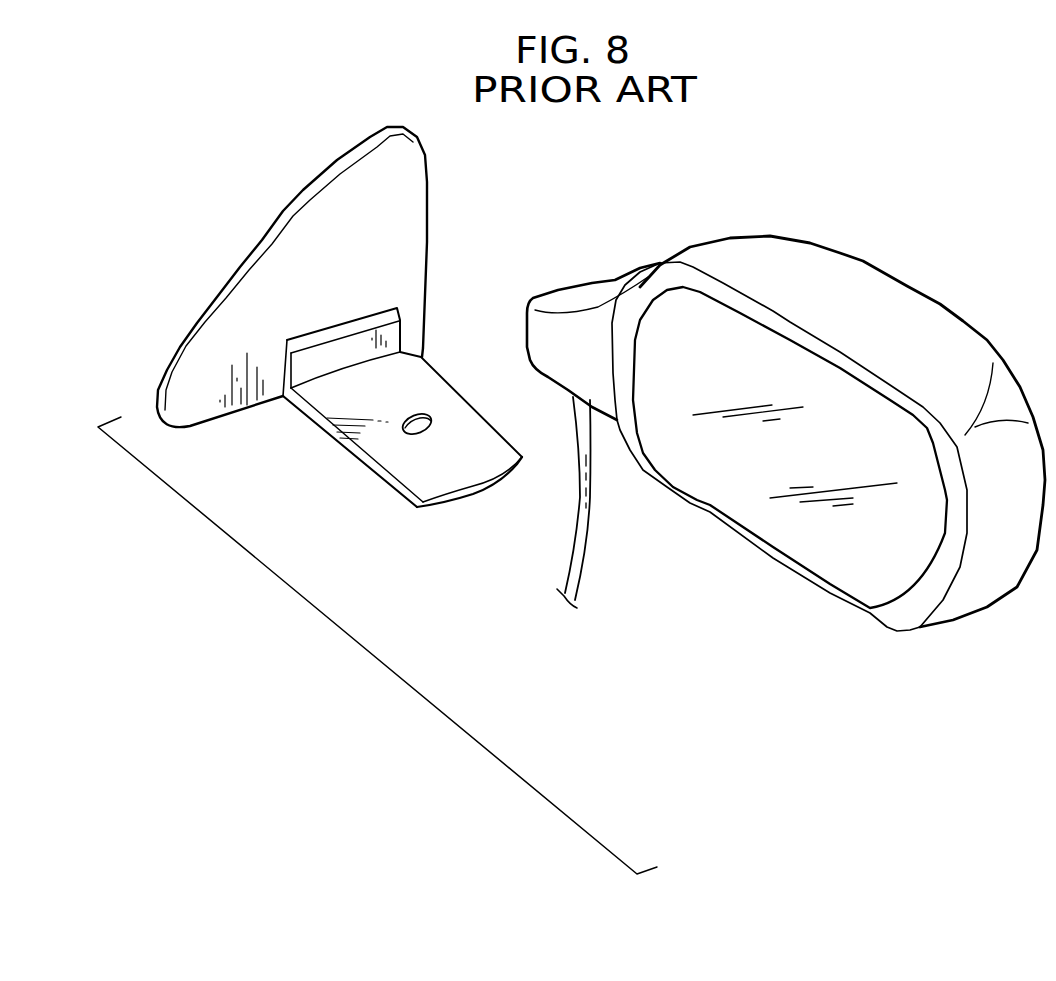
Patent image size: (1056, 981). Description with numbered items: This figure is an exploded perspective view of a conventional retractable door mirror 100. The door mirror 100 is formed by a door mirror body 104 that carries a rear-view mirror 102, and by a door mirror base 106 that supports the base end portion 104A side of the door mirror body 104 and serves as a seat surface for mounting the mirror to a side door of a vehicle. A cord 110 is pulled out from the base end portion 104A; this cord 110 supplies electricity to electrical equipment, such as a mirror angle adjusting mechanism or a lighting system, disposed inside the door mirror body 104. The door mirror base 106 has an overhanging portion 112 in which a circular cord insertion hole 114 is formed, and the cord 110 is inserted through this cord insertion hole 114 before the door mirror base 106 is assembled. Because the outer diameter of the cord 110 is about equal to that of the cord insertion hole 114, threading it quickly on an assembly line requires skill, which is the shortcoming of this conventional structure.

The door mirror 100 is at (704, 207).
The rear-view mirror 102 is at (775, 528).
The door mirror body 104 is at (862, 257).
The base end portion 104A is at (563, 297).
The door mirror base 106 is at (247, 404).
The cord 110 is at (590, 542).
The overhanging portion 112 is at (376, 473).
The cord insertion hole 114 is at (427, 410).